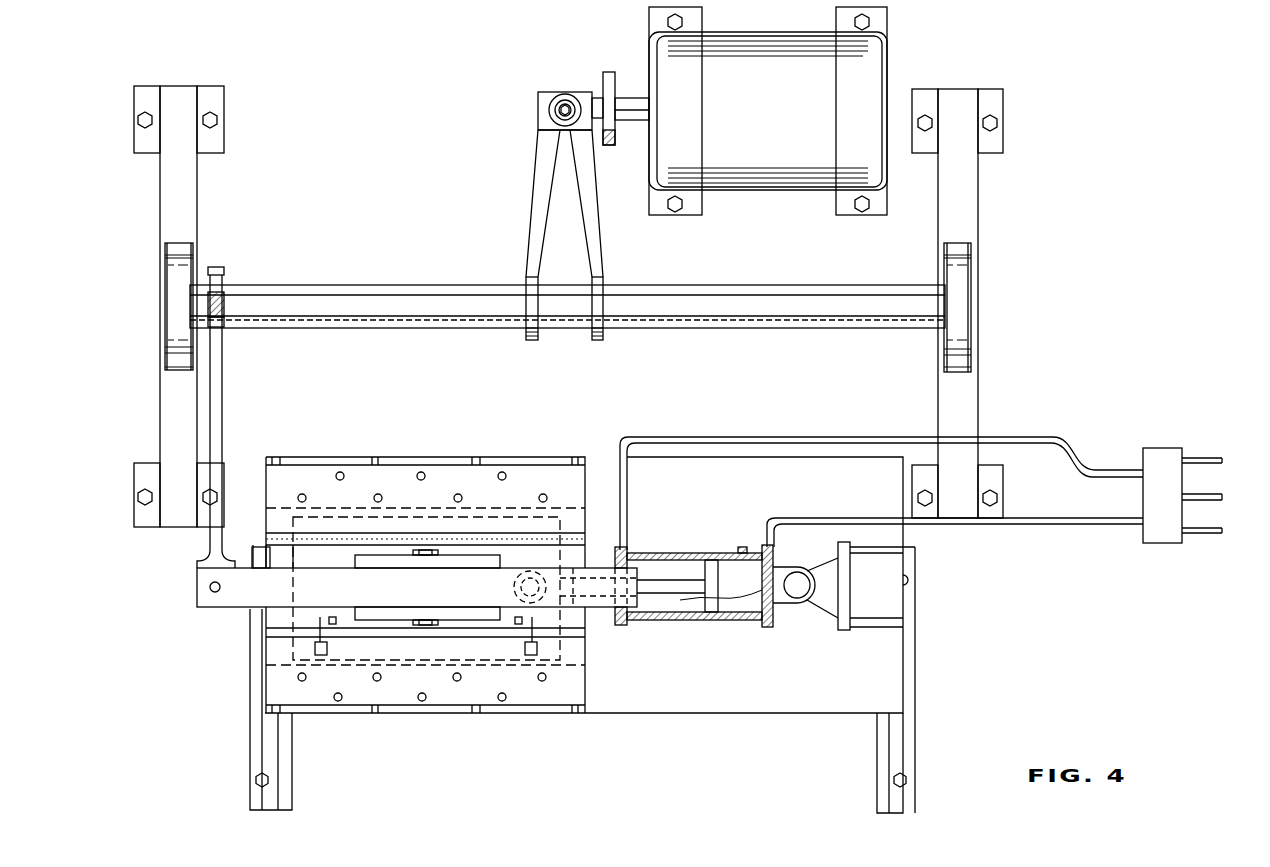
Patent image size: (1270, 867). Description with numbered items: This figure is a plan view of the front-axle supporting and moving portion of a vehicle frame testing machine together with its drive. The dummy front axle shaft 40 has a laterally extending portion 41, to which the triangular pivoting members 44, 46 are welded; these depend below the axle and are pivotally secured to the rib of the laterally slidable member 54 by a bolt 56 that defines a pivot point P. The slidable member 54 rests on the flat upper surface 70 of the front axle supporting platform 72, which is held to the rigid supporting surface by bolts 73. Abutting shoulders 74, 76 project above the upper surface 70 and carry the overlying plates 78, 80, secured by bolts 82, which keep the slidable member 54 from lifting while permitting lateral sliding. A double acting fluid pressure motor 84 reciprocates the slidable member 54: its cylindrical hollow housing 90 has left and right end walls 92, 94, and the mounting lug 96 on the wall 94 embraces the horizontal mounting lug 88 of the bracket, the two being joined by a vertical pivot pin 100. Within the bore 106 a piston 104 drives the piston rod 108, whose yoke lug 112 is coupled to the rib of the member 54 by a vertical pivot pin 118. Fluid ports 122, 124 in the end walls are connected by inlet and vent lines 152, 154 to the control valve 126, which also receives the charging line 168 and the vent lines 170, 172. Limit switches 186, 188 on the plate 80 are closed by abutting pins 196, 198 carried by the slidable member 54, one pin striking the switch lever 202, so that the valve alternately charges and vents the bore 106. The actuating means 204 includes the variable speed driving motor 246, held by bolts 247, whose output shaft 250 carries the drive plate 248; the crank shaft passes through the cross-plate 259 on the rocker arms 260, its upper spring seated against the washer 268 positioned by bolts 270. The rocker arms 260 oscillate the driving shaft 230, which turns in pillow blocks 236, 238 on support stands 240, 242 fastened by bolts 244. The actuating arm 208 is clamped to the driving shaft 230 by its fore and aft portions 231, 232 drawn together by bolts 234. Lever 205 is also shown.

The dummy front axle shaft 40 is at (338, 570).
The laterally extending portion 41 is at (417, 587).
The pivoting member 44 is at (365, 561).
The pivoting member 46 is at (400, 622).
The laterally slidable member 54 is at (580, 541).
The bolt 56 is at (405, 584).
The upper surface 70 is at (275, 620).
The front axle supporting platform 72 is at (285, 740).
The bolts 73 is at (256, 779).
The abutting shoulder 74 is at (583, 521).
The abutting shoulder 76 is at (575, 667).
The plate 78 is at (585, 470).
The plate 80 is at (573, 683).
The bolts 82 is at (422, 473).
The double acting fluid pressure motor 84 is at (716, 551).
The horizontal mounting lug 88 is at (838, 603).
The cylindrical hollow housing 90 is at (722, 552).
The left end wall 92 is at (622, 553).
The right end wall 94 is at (778, 561).
The horizontal mounting lug 96 is at (786, 600).
The vertical pivot pin 100 is at (800, 585).
The piston 104 is at (718, 574).
The bore 106 is at (743, 547).
The piston rod 108 is at (672, 600).
The horizontal lug 112 is at (540, 572).
The vertical pivot pin 118 is at (575, 603).
The fluid port 122 is at (648, 557).
The fluid port 124 is at (772, 518).
The control valve 126 is at (1165, 448).
The inlet and vent line 152 is at (730, 437).
The inlet and vent line 154 is at (855, 518).
The charging line 168 is at (1212, 497).
The vent line 170 is at (1212, 532).
The vent line 172 is at (1212, 462).
The limit switch 186 is at (320, 663).
The limit switch 188 is at (530, 663).
The abutting pin 196 is at (334, 617).
The abutting pin 198 is at (515, 617).
The switch lever 202 is at (530, 632).
The actuating means 204 is at (352, 280).
The switch 205 is at (322, 630).
The actuating arm 208 is at (220, 403).
The driving shaft 230 is at (390, 300).
The fore portion 231 is at (223, 271).
The aft portion 232 is at (223, 330).
The bolts 234 is at (224, 303).
The pillow block 236 is at (178, 246).
The pillow block 238 is at (968, 250).
The support stand 240 is at (176, 186).
The support stand 242 is at (963, 202).
The bolts 244 is at (145, 112).
The variable speed driving motor 246 is at (728, 80).
The bolts 247 is at (870, 22).
The drive plate 248 is at (608, 72).
The output shaft 250 is at (630, 122).
The cross-plate 259 is at (548, 134).
The rocker arms 260 is at (530, 196).
The washer 268 is at (555, 98).
The bolts 270 is at (558, 110).
The pivot point P is at (447, 553).